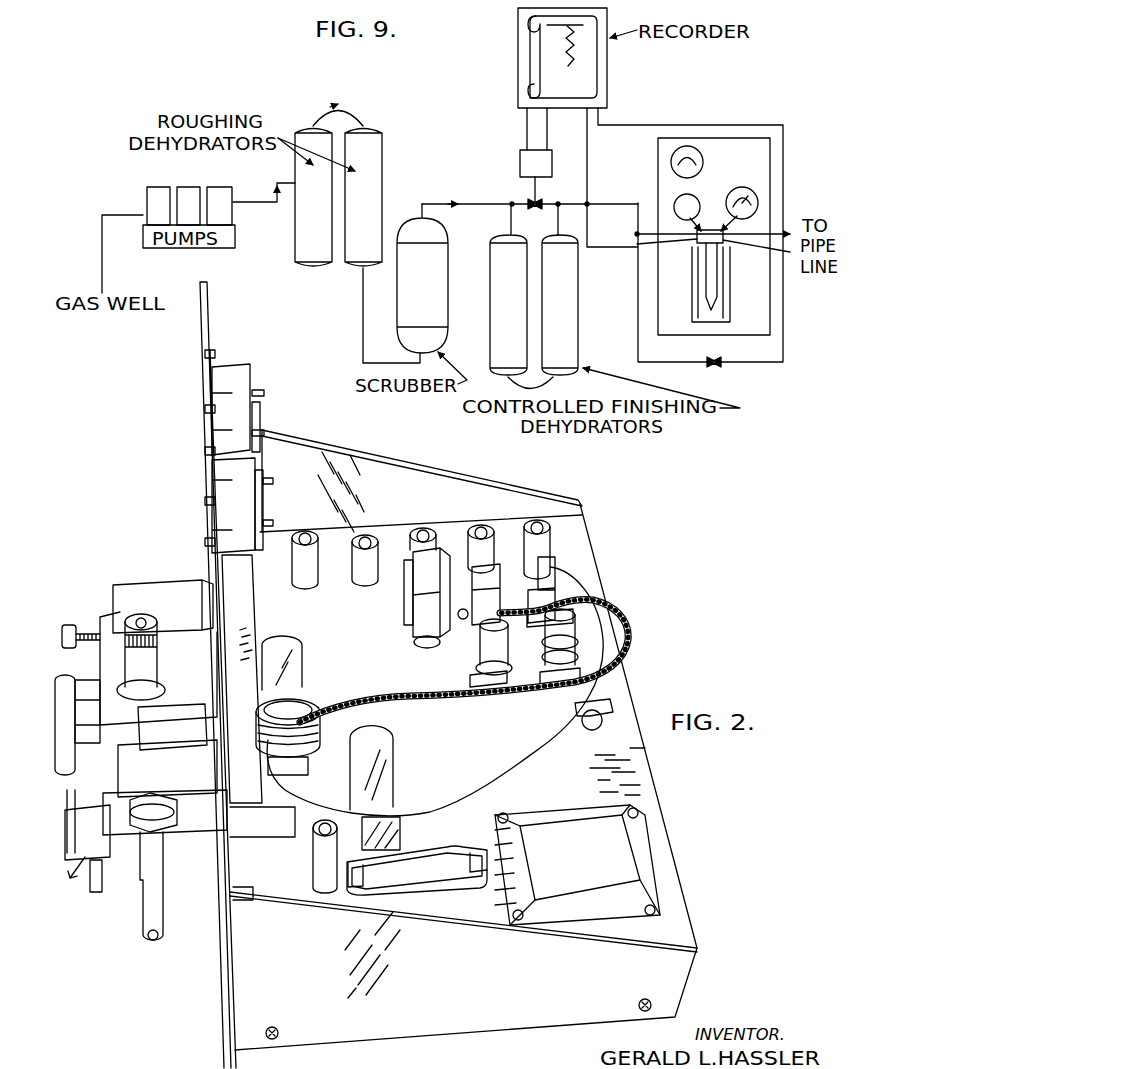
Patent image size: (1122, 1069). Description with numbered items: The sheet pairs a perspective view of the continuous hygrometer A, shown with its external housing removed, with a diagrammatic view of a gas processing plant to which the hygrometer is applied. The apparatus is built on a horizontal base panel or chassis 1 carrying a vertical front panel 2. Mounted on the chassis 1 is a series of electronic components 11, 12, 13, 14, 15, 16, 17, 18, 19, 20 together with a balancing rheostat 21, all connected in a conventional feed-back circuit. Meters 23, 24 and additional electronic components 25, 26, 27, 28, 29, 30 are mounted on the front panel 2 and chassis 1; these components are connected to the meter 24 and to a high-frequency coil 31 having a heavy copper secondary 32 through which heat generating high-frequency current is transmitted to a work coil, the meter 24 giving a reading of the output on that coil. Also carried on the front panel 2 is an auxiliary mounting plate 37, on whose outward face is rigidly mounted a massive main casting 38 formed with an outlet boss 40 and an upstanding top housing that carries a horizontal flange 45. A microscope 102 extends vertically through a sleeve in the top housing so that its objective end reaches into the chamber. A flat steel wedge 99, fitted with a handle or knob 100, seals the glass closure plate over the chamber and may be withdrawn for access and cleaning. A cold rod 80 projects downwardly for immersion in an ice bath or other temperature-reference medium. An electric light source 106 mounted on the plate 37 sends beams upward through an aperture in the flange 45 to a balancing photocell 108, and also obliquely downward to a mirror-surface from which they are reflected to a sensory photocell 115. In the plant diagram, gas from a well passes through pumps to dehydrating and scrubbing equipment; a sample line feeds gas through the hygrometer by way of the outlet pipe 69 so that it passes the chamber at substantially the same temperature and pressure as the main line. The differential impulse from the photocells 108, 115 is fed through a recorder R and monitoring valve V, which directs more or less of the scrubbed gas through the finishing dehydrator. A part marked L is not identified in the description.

In FIG. 2, the base panel or chassis 1 is at (307, 1045).
In FIG. 2, the front panel 2 is at (227, 1008).
In FIG. 2, the electronic component 11 is at (302, 530).
In FIG. 2, the electronic component 12 is at (366, 535).
In FIG. 2, the electronic component 13 is at (424, 530).
In FIG. 2, the electronic component 14 is at (482, 527).
In FIG. 2, the electronic component 15 is at (538, 523).
In FIG. 2, the electronic component 16 is at (408, 586).
In FIG. 2, the electronic component 17 is at (478, 585).
In FIG. 2, the electronic component 18 is at (534, 592).
In FIG. 2, the electronic component 19 is at (482, 641).
In FIG. 2, the electronic component 20 is at (546, 640).
In FIG. 2, the balancing rheostat 21 is at (610, 703).
In FIG. 2, the meter 23 is at (228, 370).
In FIG. 2, the meter 24 is at (248, 470).
In FIG. 2, the electronic component 25 is at (303, 643).
In FIG. 2, the electronic component 26 is at (390, 744).
In FIG. 2, the electronic component 27 is at (397, 833).
In FIG. 2, the electronic component 28 is at (318, 866).
In FIG. 2, the electronic component 29 is at (453, 848).
In FIG. 2, the electronic component 30 is at (540, 815).
In FIG. 2, the high-frequency coil 31 is at (305, 706).
In FIG. 2, the heavy copper secondary 32 is at (326, 716).
In FIG. 2, the auxiliary mounting plate 37 is at (220, 943).
In FIG. 2, the main casting 38 is at (115, 830).
In FIG. 2, the outlet boss 40 is at (174, 826).
In FIG. 2, the horizontal flange 45 is at (122, 720).
In FIG. 2, the outlet pipe 69 is at (141, 912).
In FIG. 9, the cold rod 80 is at (716, 285).
In FIG. 2, the flat steel wedge 99 is at (92, 744).
In FIG. 2, the handle or knob 100 is at (68, 684).
In FIG. 2, the microscope 102 is at (153, 658).
In FIG. 9, the electric light source 106 is at (675, 201).
In FIG. 9, the balancing photocell 108 is at (671, 160).
In FIG. 2, the balancing photocell 108 is at (143, 587).
In FIG. 9, the sensory photocell 115 is at (750, 188).
In FIG. 2, the sensory photocell 115 is at (180, 773).
In FIG. 9, the continuous hygrometer A is at (755, 340).
In FIG. 9, the recorder R is at (516, 62).
In FIG. 9, the monitoring valve V is at (517, 160).
In FIG. 2, the adjusting knob L is at (92, 630).